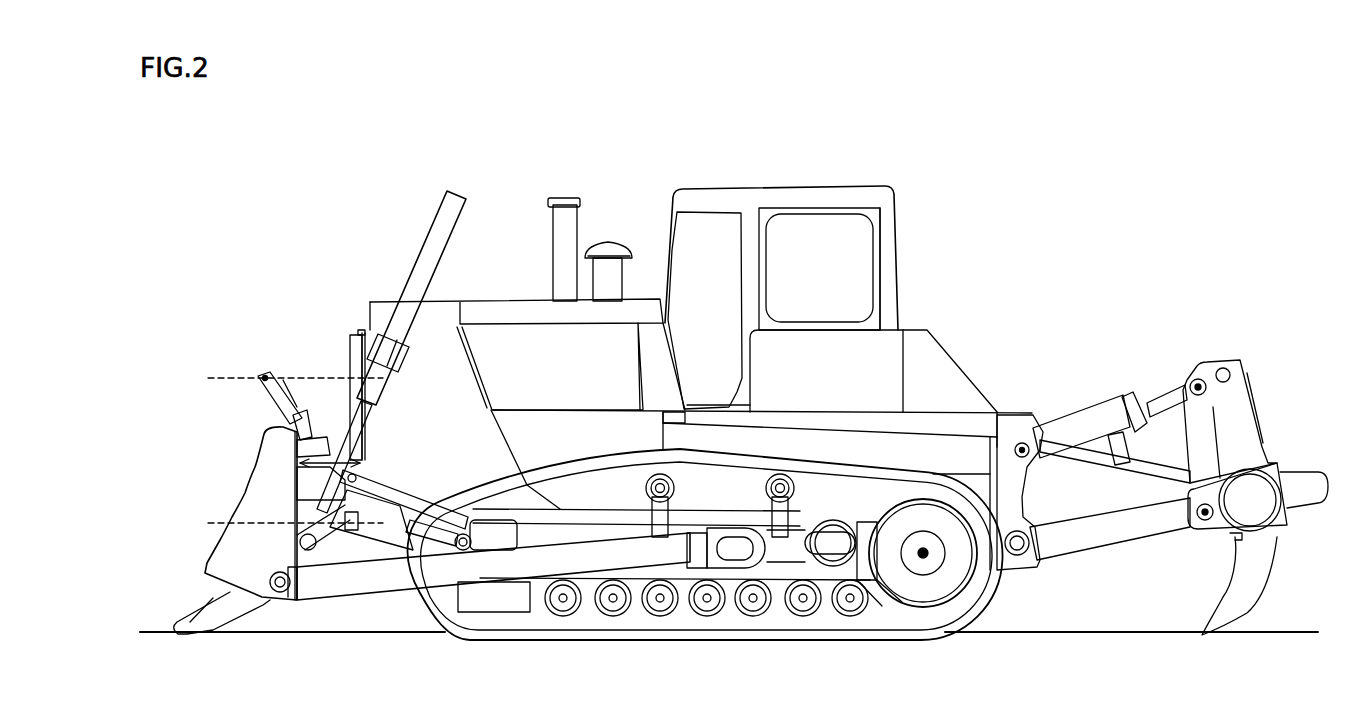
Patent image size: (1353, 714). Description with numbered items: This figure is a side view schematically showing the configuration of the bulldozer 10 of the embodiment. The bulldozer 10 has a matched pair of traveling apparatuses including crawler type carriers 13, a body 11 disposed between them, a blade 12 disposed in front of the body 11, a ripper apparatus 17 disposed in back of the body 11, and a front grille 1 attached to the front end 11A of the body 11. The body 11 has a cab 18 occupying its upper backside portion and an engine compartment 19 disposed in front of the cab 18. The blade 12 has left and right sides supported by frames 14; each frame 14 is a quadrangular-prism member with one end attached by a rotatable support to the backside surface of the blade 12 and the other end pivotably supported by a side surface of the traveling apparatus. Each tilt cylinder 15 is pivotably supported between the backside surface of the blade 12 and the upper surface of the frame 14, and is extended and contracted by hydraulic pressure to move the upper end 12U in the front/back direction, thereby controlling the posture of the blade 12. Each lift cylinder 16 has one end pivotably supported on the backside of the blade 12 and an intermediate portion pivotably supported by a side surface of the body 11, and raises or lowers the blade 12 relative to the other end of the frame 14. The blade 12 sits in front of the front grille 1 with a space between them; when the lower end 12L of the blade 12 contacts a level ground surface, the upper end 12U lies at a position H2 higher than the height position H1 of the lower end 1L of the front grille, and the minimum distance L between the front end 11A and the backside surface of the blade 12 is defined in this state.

The bulldozer 10 is at (857, 157).
The body 11 is at (633, 347).
The front end of body 11A is at (368, 320).
The blade 12 is at (237, 483).
The upper end of blade 12U is at (265, 376).
The lower end of blade 12L is at (207, 610).
The crawler type carrier 13 is at (725, 643).
The frame 14 is at (408, 575).
The tilt cylinder 15 is at (376, 507).
The lift cylinder 16 is at (450, 208).
The ripper apparatus 17 is at (1160, 403).
The cab 18 is at (760, 207).
The engine compartment 19 is at (518, 352).
The front grille 1 is at (351, 335).
The lower end of front grille 1L is at (357, 527).
The height position of lower end of front grille H1 is at (281, 522).
The position of upper end of blade H2 is at (281, 378).
The minimum distance L is at (332, 459).